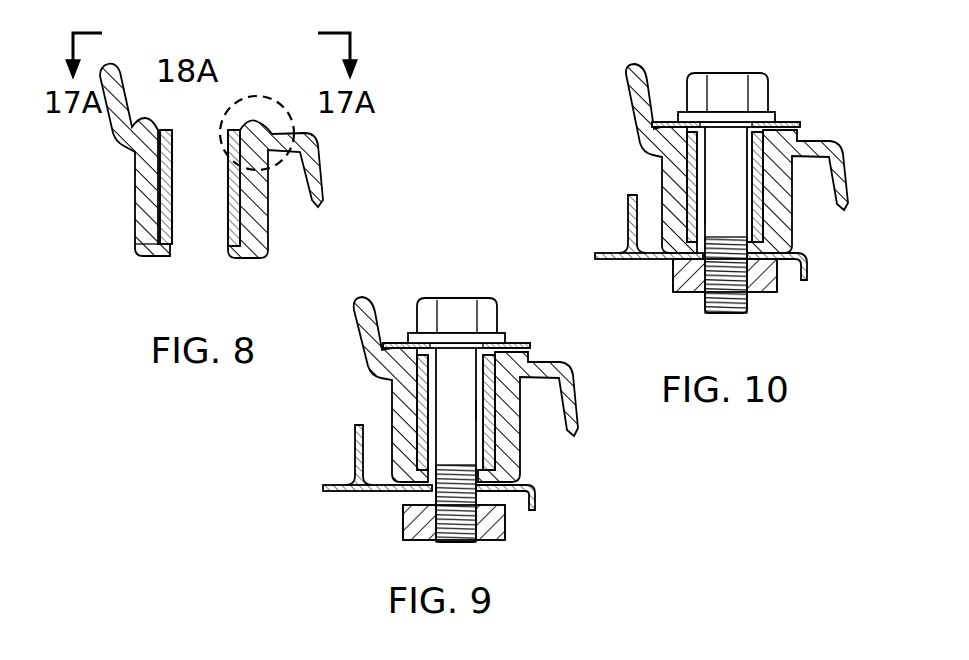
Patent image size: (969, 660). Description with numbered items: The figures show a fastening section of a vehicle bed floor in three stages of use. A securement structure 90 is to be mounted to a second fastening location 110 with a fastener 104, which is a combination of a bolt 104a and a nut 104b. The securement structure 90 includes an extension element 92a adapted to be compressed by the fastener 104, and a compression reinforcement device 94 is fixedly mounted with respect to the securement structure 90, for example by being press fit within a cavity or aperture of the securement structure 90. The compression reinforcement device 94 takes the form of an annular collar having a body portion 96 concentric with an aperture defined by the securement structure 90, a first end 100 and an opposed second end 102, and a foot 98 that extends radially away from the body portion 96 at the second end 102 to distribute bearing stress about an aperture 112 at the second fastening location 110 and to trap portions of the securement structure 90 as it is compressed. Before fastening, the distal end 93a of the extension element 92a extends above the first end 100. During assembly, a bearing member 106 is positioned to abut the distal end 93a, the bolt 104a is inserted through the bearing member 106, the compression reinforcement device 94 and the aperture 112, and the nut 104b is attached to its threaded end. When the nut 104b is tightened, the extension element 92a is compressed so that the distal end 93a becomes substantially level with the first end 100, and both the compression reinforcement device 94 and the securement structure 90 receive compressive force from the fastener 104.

In FIG. 8, the securement structure 90 is at (135, 138).
In FIG. 9, the securement structure 90 is at (365, 389).
In FIG. 10, the securement structure 90 is at (617, 158).
In FIG. 8, the extension element 92a is at (270, 138).
In FIG. 9, the extension element 92a is at (537, 355).
In FIG. 10, the extension element 92a is at (808, 127).
In FIG. 8, the distal end 93a is at (258, 122).
In FIG. 9, the distal end 93a is at (397, 343).
In FIG. 10, the distal end 93a is at (781, 127).
In FIG. 8, the compression reinforcement device 94 is at (230, 221).
In FIG. 9, the compression reinforcement device 94 is at (477, 411).
In FIG. 10, the compression reinforcement device 94 is at (708, 212).
In FIG. 8, the body portion 96 is at (173, 199).
In FIG. 8, the foot 98 is at (144, 257).
In FIG. 8, the first end 100 is at (174, 132).
In FIG. 10, the first end 100 is at (724, 128).
In FIG. 8, the second end 102 is at (170, 257).
In FIG. 9, the fastener 104 is at (536, 448).
In FIG. 10, the fastener 104 is at (780, 250).
In FIG. 9, the bolt 104a is at (466, 298).
In FIG. 9, the nut 104b is at (482, 540).
In FIG. 10, the nut 104b is at (781, 290).
In FIG. 9, the bearing member 106 is at (513, 343).
In FIG. 9, the second fastening location 110 is at (382, 492).
In FIG. 10, the second fastening location 110 is at (701, 237).
In FIG. 9, the aperture 112 is at (403, 532).